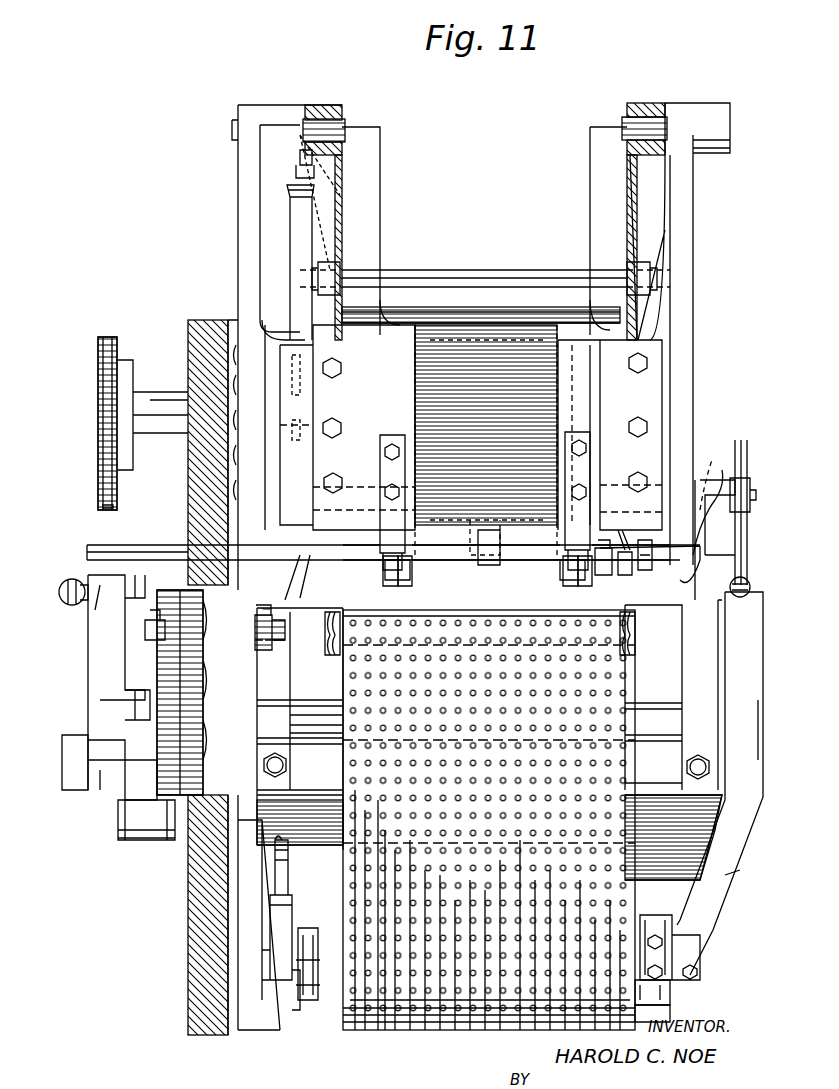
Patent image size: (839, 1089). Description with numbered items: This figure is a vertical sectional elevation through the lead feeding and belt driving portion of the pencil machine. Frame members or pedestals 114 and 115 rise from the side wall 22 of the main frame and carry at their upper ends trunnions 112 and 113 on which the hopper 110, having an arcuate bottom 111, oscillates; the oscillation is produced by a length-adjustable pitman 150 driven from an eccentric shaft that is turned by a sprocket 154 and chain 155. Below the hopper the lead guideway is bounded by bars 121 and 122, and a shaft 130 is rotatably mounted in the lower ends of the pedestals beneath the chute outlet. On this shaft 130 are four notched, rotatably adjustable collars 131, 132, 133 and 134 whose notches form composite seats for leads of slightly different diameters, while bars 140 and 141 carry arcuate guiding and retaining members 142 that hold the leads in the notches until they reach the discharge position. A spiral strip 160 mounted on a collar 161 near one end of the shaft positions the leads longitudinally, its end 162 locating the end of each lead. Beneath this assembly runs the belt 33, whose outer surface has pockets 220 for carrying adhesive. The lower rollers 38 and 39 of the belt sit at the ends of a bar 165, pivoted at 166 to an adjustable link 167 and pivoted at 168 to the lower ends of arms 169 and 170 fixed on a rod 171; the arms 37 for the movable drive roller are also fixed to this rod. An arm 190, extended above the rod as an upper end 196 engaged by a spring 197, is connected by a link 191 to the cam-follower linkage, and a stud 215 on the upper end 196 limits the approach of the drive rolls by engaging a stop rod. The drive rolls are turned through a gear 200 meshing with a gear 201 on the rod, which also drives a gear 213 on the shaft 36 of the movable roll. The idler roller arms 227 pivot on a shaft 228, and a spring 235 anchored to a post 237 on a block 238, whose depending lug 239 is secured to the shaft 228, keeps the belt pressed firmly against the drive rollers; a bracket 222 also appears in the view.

The side wall 22 is at (200, 460).
The belt 33 is at (610, 772).
The shaft 36 is at (178, 634).
The arms 37 is at (283, 690).
The roller 38 is at (712, 895).
The roller 39 is at (672, 1003).
The hopper 110 is at (370, 142).
The arcuate bottom 111 is at (348, 340).
The trunnion 112 is at (342, 120).
The trunnion 113 is at (622, 125).
The frame member or pedestal 114 is at (248, 196).
The frame member or pedestal 115 is at (688, 223).
The bar 121 is at (318, 446).
The bar 122 is at (654, 386).
The shaft 130 is at (136, 548).
The collar 131 is at (585, 572).
The collar 132 is at (570, 568).
The collar 133 is at (406, 572).
The collar 134 is at (392, 565).
The bar 140 is at (585, 470).
The bar 141 is at (385, 468).
The arcuate guiding and retaining member 142 is at (370, 572).
The pitman 150 is at (300, 232).
The sprocket 154 is at (118, 345).
The chain 155 is at (104, 490).
The spiral strip 160 is at (626, 565).
The collar 161 is at (650, 565).
The end of spiral strip 162 is at (618, 568).
The bar 165 is at (655, 952).
The pivot 166 is at (290, 985).
The link 167 is at (275, 930).
The pivot 168 is at (658, 935).
The arm 169 is at (248, 872).
The arm 170 is at (722, 872).
The rod 171 is at (326, 735).
The arm 190 is at (140, 775).
The link 191 is at (128, 840).
The upper end of arm 196 is at (98, 598).
The spring 197 is at (58, 592).
The gear 200 is at (166, 660).
The gear 201 is at (175, 742).
The gear 213 is at (160, 604).
The stud 215 is at (138, 588).
The pockets 220 is at (445, 1010).
The bracket 222 is at (695, 625).
The arms 227 is at (313, 560).
The shaft 228 is at (700, 450).
The spring 235 is at (752, 578).
The post 237 is at (748, 440).
The block 238 is at (742, 488).
The lug 239 is at (484, 562).